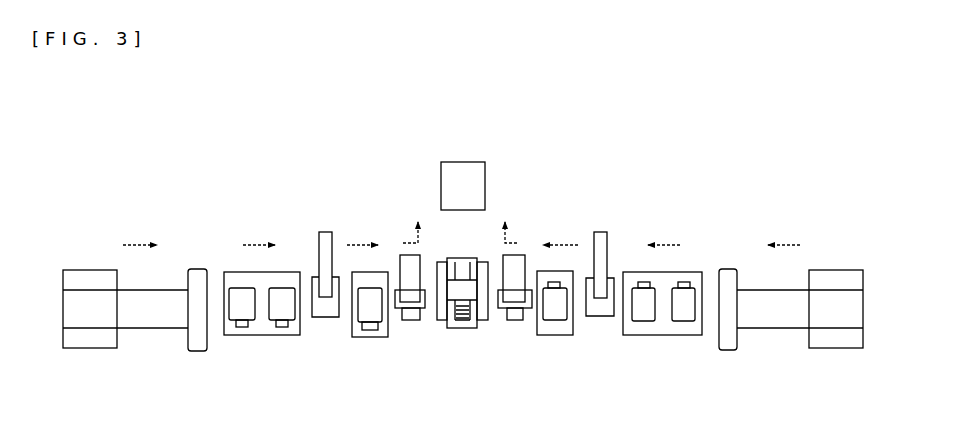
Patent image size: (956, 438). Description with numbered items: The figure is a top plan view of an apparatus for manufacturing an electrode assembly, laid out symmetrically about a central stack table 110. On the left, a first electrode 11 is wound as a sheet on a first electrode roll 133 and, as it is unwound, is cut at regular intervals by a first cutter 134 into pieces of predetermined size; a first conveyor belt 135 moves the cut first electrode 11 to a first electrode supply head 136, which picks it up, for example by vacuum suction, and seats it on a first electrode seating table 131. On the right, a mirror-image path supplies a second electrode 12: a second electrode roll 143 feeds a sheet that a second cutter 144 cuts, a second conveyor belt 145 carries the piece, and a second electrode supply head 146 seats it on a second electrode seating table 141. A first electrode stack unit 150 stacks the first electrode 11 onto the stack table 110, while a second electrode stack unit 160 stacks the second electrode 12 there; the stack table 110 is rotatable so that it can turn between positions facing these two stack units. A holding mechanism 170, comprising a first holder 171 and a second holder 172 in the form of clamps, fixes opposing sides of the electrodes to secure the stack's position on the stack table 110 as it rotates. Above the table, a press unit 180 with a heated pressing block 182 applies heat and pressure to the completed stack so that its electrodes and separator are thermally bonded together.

The first electrode 11 is at (362, 337).
The second electrode 12 is at (552, 320).
The stack table 110 is at (617, 250).
The first electrode seating table 131 is at (387, 338).
The first electrode roll 133 is at (90, 349).
The first cutter 134 is at (196, 352).
The first conveyor belt 135 is at (262, 336).
The first electrode supply head 136 is at (323, 322).
The second electrode seating table 141 is at (572, 336).
The second electrode roll 143 is at (838, 349).
The second cutter 144 is at (723, 351).
The second conveyor belt 145 is at (664, 336).
The second electrode supply head 146 is at (600, 323).
The first electrode stack unit 150 is at (398, 251).
The second electrode stack unit 160 is at (527, 251).
The holding mechanism 170 is at (632, 249).
The first holder 171 is at (453, 257).
The second holder 172 is at (455, 327).
The press unit 180 is at (494, 185).
The heated pressing block 182 is at (482, 190).